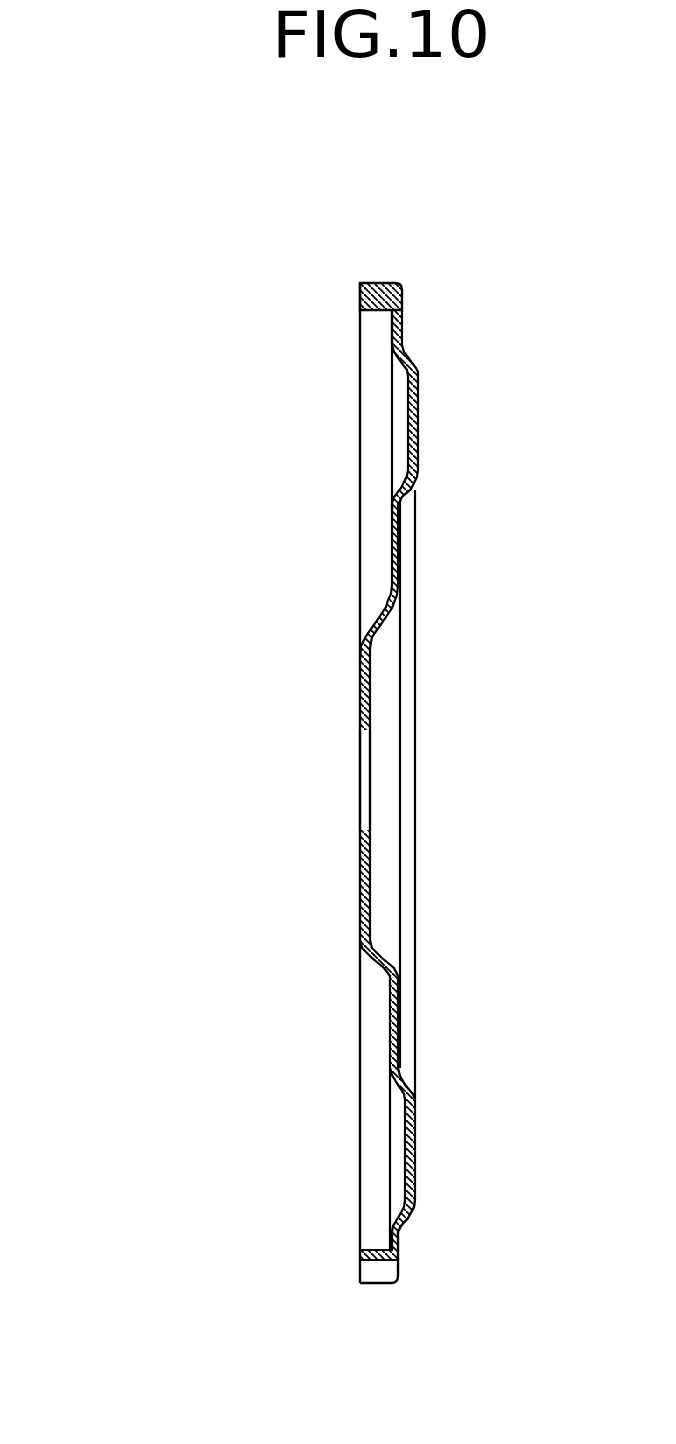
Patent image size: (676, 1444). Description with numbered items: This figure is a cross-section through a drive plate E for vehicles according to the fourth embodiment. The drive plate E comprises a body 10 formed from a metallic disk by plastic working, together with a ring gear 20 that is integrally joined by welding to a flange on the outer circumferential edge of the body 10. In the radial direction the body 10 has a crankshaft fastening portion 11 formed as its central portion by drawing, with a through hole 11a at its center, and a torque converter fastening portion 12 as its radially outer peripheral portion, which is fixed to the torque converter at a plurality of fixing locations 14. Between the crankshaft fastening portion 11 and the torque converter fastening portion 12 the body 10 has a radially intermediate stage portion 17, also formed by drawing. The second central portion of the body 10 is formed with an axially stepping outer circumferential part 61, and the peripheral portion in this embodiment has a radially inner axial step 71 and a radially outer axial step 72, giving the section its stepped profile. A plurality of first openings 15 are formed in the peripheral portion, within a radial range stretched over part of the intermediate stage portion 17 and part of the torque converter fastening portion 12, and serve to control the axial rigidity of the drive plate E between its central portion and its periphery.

The drive plate E is at (139, 257).
The body 10 is at (193, 318).
The crankshaft fastening portion 11 is at (362, 657).
The through hole 11a is at (362, 829).
The torque converter fastening portion 12 is at (408, 372).
The fixing locations 14 is at (414, 418).
The first openings 15 is at (400, 497).
The intermediate stage portion 17 is at (390, 518).
The ring gear 20 is at (390, 283).
The axially stepping outer circumferential part 61 is at (400, 946).
The radially inner axial step 71 is at (398, 1088).
The radially outer axial step 72 is at (404, 1205).